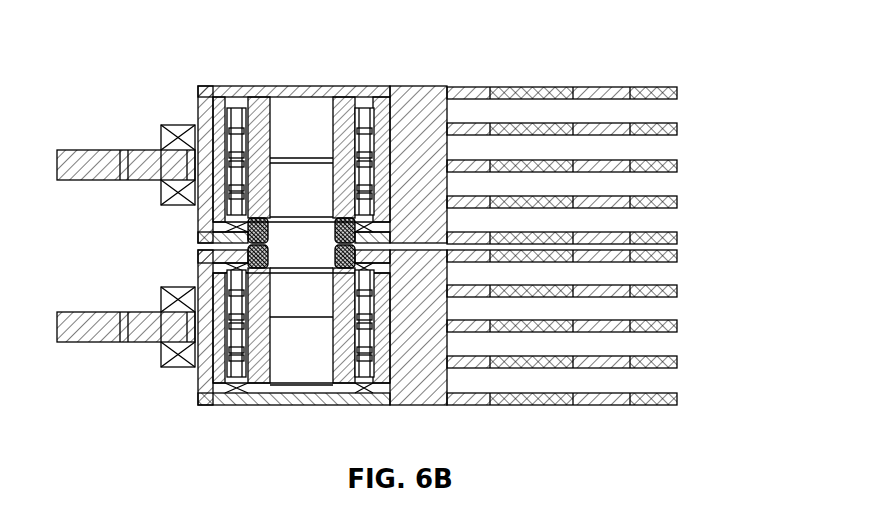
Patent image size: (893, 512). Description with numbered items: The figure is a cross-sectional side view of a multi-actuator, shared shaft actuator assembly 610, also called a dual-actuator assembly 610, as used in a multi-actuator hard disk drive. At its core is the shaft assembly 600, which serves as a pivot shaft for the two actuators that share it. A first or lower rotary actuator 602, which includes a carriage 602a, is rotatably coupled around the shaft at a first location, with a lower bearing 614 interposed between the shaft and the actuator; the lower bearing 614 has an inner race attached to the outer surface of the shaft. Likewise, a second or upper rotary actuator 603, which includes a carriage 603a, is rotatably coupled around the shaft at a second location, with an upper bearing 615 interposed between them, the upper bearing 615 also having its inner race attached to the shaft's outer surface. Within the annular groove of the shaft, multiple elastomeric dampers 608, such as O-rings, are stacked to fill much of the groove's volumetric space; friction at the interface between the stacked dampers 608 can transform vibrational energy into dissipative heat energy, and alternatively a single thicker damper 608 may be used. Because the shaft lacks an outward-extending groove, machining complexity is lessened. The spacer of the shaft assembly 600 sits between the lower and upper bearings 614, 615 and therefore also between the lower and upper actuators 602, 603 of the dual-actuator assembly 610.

The dual-actuator assembly 610 is at (446, 42).
The shaft assembly 600 is at (265, 100).
The lower bearing 614 is at (250, 406).
The upper bearing 615 is at (333, 140).
The elastomeric damper 608 is at (335, 262).
The carriage 603a is at (423, 97).
The carriage 602a is at (403, 405).
The upper rotary actuator 603 is at (92, 148).
The lower rotary actuator 602 is at (93, 335).